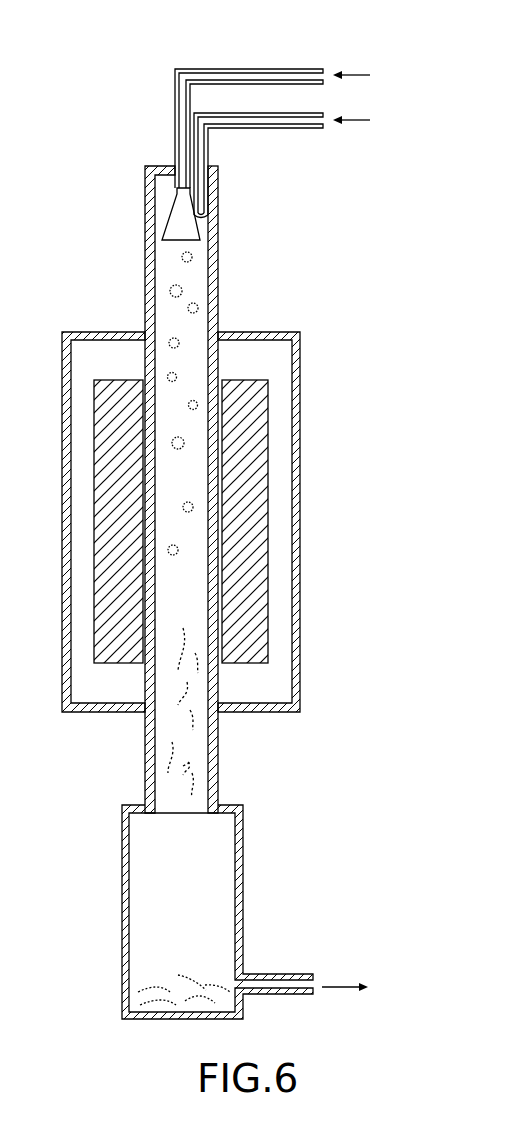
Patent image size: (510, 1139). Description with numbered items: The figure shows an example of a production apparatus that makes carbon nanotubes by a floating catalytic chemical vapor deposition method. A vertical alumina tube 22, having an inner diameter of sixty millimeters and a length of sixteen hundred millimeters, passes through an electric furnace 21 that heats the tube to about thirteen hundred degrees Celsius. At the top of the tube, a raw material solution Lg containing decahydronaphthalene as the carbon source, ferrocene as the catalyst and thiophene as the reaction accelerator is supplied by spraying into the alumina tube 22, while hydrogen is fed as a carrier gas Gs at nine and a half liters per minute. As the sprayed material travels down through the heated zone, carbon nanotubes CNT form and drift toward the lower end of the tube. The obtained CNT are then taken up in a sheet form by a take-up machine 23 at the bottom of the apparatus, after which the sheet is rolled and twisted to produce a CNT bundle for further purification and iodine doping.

The electric furnace 21 is at (300, 478).
The alumina tube 22 is at (218, 240).
The take-up machine 23 is at (243, 890).
The raw material solution Lg is at (360, 75).
The carrier gas Gs is at (360, 120).
The carbon nanotubes CNT is at (183, 772).